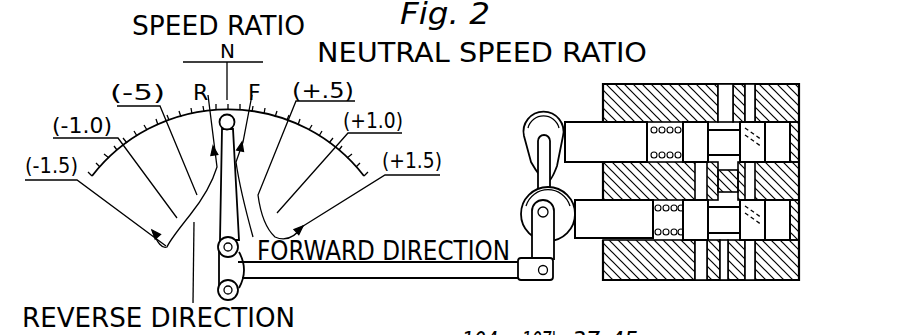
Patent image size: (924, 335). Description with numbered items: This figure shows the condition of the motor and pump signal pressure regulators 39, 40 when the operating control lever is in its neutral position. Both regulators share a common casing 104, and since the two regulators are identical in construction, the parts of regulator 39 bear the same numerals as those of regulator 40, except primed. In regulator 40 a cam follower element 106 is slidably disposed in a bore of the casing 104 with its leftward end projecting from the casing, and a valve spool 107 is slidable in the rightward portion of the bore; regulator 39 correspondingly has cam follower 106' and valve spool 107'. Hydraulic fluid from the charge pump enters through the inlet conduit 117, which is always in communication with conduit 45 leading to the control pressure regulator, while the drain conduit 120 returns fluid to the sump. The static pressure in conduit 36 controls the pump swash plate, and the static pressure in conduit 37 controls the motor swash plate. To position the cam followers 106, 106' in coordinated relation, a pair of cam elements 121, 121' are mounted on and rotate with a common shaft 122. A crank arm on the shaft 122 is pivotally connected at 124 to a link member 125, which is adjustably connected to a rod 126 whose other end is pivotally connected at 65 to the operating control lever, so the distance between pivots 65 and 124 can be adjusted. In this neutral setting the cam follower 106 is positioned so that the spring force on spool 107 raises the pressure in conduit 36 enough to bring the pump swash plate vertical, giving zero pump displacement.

The conduit 36 is at (727, 273).
The conduit 37 is at (727, 86).
The motor signal pressure regulator 39 is at (773, 121).
The pump signal pressure regulator 40 is at (757, 244).
The conduit 45 is at (756, 84).
The pivot 65 is at (234, 256).
The casing 104 is at (662, 92).
The cam follower element 106 is at (614, 219).
The cam follower element 106' is at (606, 142).
The valve spool 107 is at (687, 255).
The valve spool 107' is at (724, 97).
The inlet conduit 117 is at (748, 270).
The drain conduit 120 is at (700, 268).
The cam element 121 is at (521, 223).
The cam element 121' is at (546, 130).
The common shaft 122 is at (537, 152).
The pivot 124 is at (553, 272).
The link member 125 is at (521, 280).
The rod 126 is at (424, 278).